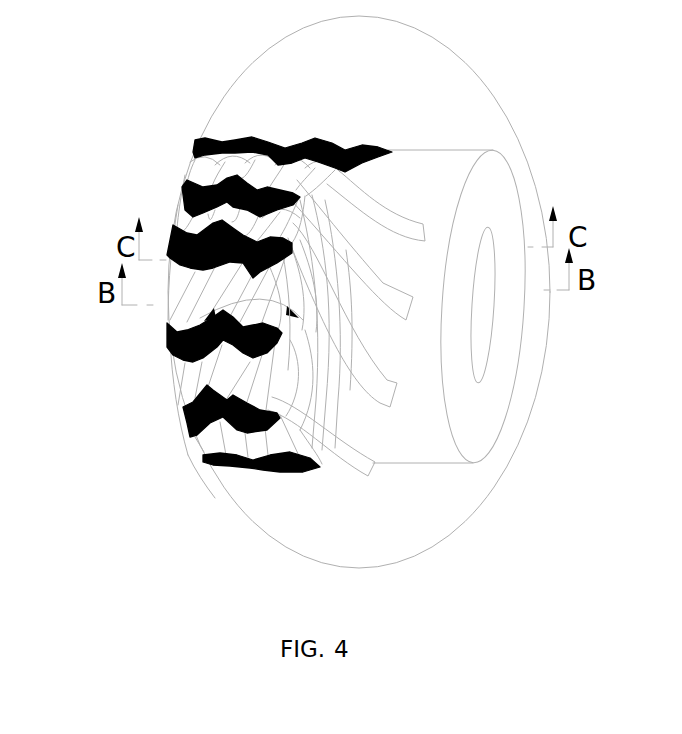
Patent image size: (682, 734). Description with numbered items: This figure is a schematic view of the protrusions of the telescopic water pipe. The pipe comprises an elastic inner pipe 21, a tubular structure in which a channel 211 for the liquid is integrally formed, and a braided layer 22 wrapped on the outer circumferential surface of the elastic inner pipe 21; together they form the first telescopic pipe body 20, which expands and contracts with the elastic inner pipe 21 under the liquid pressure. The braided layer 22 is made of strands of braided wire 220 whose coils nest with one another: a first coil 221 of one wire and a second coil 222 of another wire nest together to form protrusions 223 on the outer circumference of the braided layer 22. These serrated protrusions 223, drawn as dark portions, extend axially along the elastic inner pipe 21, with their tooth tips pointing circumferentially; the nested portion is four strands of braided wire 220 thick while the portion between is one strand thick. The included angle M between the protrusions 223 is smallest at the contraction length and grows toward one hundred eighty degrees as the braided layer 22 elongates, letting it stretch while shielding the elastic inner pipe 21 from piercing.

The first telescopic pipe body 20 is at (278, 506).
The elastic inner pipe 21 is at (490, 370).
The channel 211 is at (474, 340).
The braided layer 22 is at (223, 468).
The braided wire 220 is at (70, 355).
The first coil 221 is at (185, 342).
The second coil 222 is at (200, 420).
The protrusions 223 is at (202, 152).